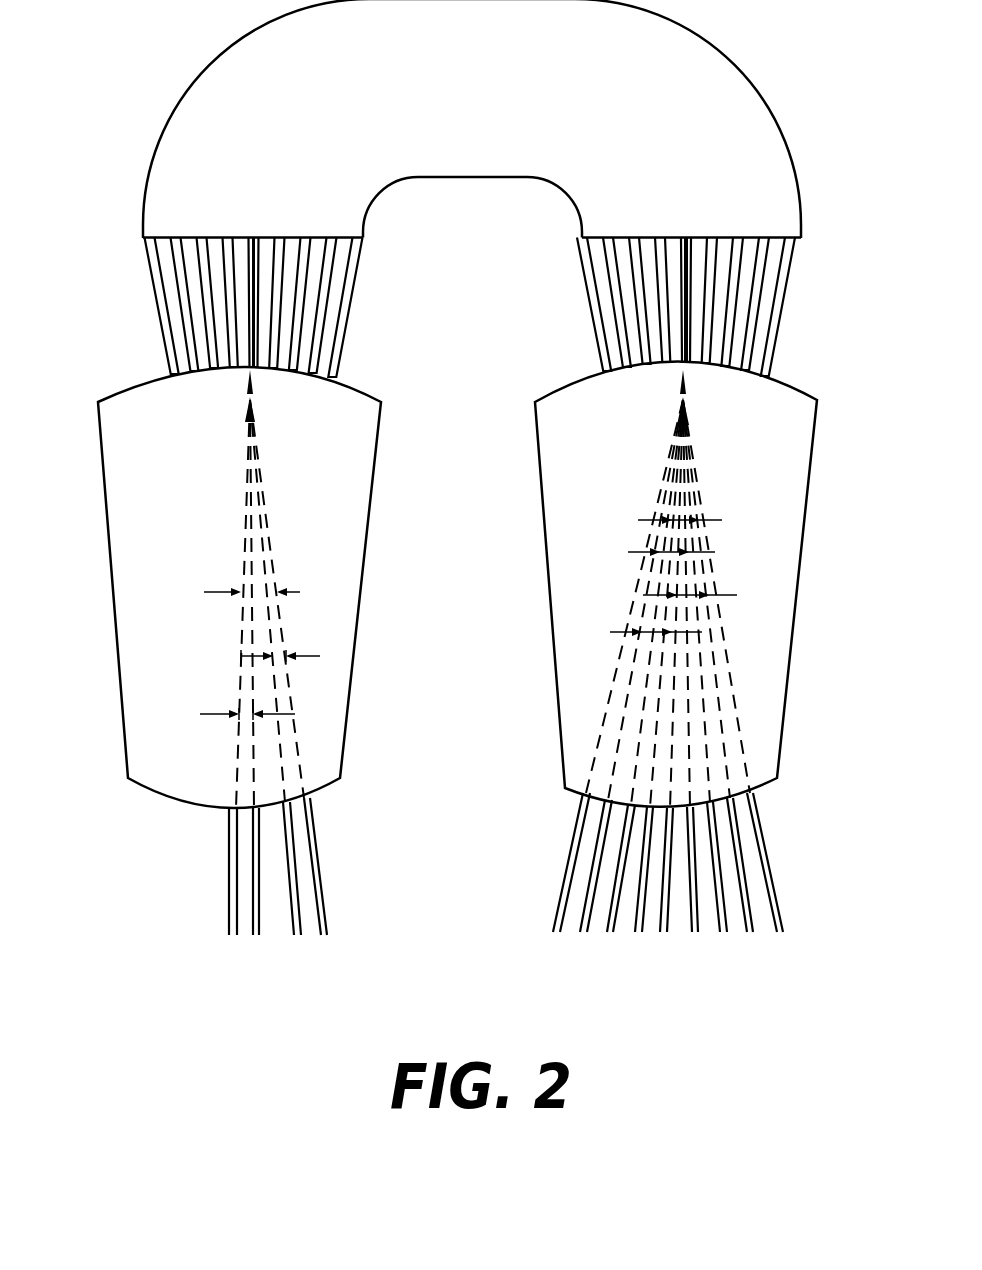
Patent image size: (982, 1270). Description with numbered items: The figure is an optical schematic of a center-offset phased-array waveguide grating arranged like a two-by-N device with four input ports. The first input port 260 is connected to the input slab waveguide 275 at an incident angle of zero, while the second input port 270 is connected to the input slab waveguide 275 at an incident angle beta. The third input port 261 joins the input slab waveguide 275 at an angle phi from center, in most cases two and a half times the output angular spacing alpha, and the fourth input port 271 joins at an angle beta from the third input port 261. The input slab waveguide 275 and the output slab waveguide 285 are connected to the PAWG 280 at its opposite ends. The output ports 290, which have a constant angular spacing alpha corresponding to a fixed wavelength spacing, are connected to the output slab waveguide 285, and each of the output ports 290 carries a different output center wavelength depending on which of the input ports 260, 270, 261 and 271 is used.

The first input port 260 is at (228, 922).
The third input port 261 is at (293, 985).
The second input port 270 is at (252, 985).
The fourth input port 271 is at (343, 940).
The input slab waveguide 275 is at (148, 656).
The PAWG 280 is at (472, 178).
The output slab waveguide 285 is at (785, 703).
The output ports 290 is at (577, 860).